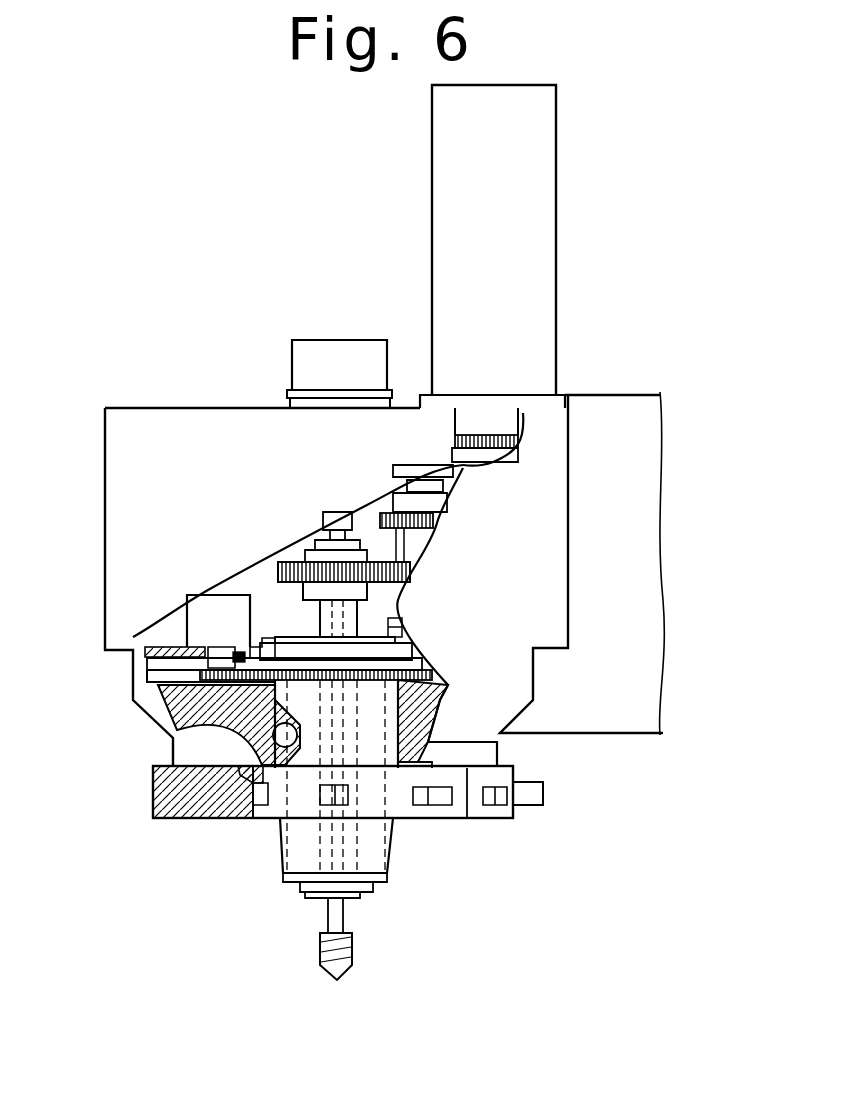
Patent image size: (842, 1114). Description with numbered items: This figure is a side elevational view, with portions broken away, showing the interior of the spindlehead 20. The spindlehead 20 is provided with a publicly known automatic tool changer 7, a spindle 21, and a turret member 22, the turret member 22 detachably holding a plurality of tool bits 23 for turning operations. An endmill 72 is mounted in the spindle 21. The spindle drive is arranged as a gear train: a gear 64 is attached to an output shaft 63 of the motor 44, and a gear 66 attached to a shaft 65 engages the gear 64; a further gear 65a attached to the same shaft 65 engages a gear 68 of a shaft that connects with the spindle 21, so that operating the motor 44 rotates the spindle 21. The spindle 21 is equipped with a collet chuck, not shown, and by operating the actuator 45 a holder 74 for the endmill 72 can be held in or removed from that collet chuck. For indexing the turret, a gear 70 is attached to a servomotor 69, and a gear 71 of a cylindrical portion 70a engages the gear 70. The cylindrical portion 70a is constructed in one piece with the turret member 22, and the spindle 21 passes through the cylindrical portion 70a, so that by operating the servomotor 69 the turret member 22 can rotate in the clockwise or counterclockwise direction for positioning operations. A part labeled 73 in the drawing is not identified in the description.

The automatic tool changer 7 is at (367, 890).
The spindlehead 20 is at (557, 547).
The spindle 21 is at (385, 745).
The turret member 22 is at (510, 777).
The tool bits 23 is at (543, 800).
The motor 44 is at (540, 243).
The actuator 45 is at (315, 345).
The output shaft 63 is at (497, 400).
The gear 64 is at (515, 432).
The shaft 65 is at (417, 543).
The gear 65a is at (410, 585).
The gear 66 is at (442, 440).
The gear 68 is at (400, 612).
The servomotor 69 is at (193, 622).
The gear 70 is at (150, 665).
The cylindrical portion 70a is at (173, 732).
The gear 71 is at (195, 706).
The endmill 72 is at (355, 968).
The coupling 73 is at (330, 515).
The holder 74 is at (315, 903).